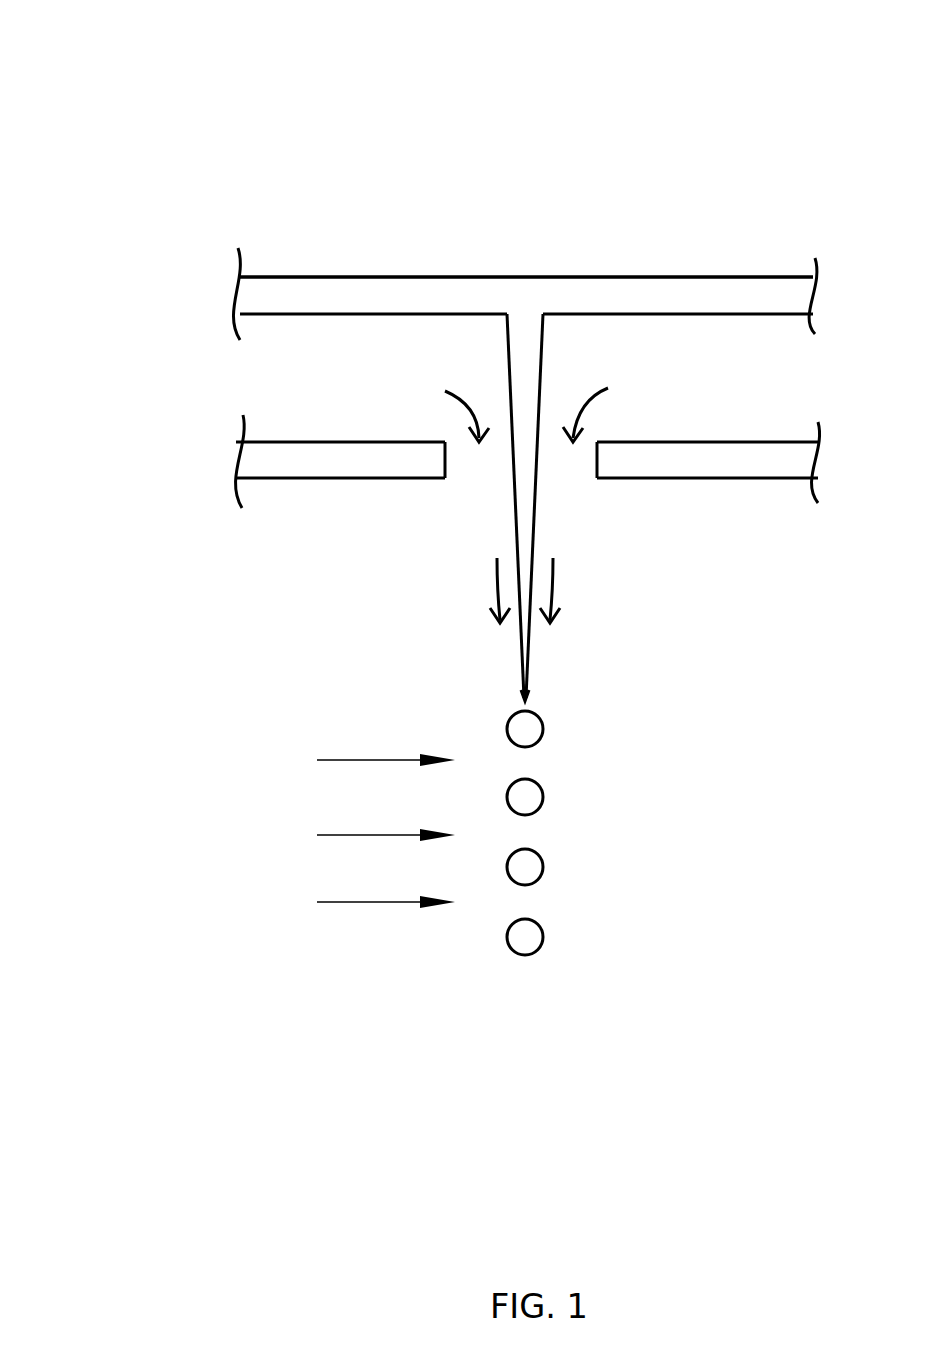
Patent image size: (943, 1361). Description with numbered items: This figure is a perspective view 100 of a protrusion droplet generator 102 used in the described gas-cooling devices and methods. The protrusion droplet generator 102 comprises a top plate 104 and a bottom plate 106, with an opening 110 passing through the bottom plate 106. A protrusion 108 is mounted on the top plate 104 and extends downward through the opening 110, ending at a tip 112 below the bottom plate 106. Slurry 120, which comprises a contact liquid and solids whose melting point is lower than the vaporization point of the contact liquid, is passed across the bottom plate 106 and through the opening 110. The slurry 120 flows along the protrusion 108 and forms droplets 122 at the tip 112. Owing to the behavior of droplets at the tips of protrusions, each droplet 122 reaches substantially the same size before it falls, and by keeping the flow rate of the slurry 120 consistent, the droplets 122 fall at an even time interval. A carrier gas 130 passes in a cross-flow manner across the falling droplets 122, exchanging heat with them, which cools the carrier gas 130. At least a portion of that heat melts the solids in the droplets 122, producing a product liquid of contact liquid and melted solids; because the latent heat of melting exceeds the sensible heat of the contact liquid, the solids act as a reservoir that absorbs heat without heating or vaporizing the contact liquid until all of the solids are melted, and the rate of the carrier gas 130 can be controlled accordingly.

The perspective view 100 is at (150, 57).
The protrusion droplet generator 102 is at (277, 252).
The top plate 104 is at (412, 276).
The bottom plate 106 is at (392, 478).
The protrusion 108 is at (532, 355).
The opening 110 is at (582, 475).
The tip 112 is at (522, 698).
The slurry 120 is at (529, 494).
The droplets 122 is at (545, 731).
The carrier gas 130 is at (353, 831).